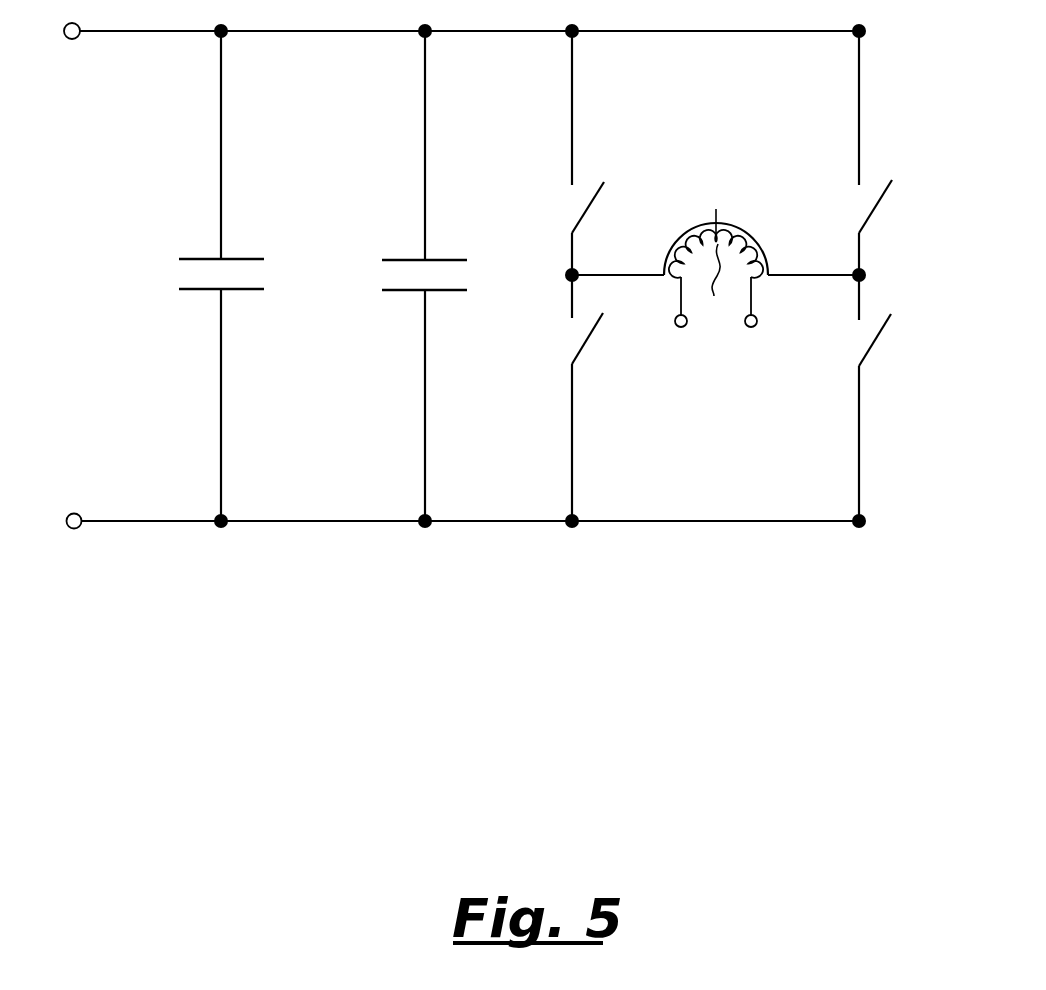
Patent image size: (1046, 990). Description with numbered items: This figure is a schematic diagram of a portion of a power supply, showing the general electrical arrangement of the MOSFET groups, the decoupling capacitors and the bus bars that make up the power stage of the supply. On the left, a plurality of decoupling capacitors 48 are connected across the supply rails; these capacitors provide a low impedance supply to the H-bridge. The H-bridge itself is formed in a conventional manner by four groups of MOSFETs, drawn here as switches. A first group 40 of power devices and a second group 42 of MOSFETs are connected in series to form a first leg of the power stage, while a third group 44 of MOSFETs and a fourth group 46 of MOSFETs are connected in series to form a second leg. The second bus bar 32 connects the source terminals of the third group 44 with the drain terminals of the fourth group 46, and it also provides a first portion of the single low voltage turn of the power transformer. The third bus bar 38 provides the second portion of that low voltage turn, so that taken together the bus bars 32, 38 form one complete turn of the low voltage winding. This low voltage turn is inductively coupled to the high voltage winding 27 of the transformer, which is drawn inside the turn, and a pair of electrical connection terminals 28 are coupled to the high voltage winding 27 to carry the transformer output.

The high voltage winding 27 is at (716, 282).
The electrical connection terminals 28 is at (681, 327).
The second bus bar 32 is at (694, 224).
The third bus bar 38 is at (763, 232).
The first group of power devices 40 is at (583, 222).
The second group of MOSFETs 42 is at (588, 340).
The third group of MOSFETs 44 is at (880, 205).
The fourth group of MOSFETs 46 is at (878, 340).
The decoupling capacitors 48 is at (247, 259).